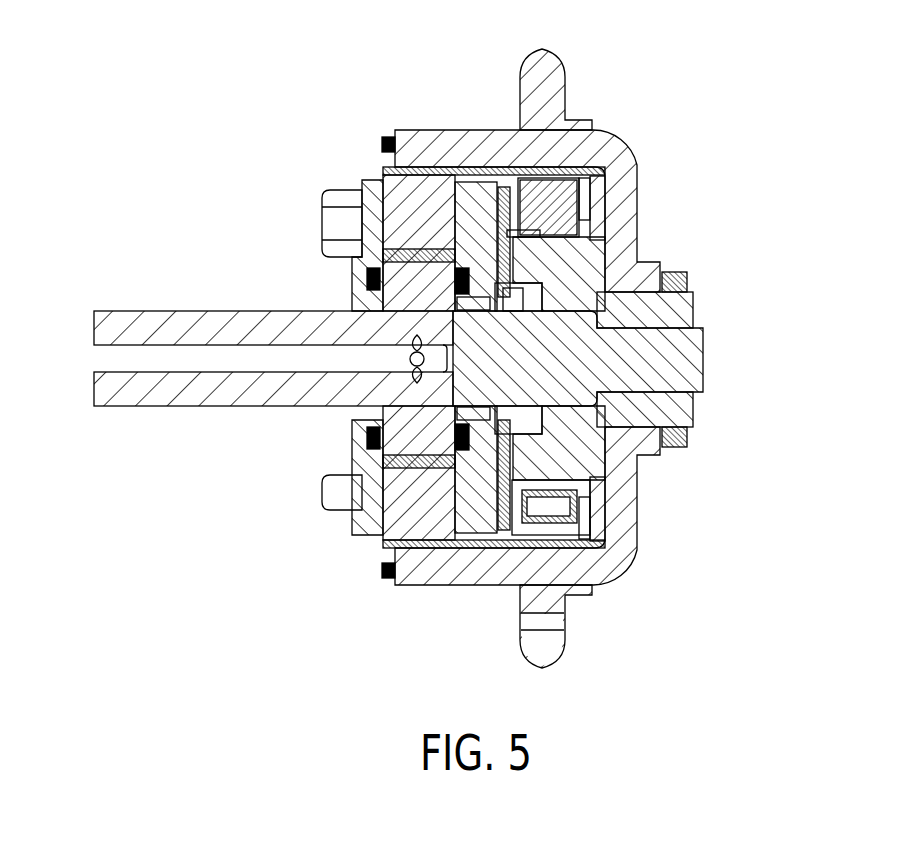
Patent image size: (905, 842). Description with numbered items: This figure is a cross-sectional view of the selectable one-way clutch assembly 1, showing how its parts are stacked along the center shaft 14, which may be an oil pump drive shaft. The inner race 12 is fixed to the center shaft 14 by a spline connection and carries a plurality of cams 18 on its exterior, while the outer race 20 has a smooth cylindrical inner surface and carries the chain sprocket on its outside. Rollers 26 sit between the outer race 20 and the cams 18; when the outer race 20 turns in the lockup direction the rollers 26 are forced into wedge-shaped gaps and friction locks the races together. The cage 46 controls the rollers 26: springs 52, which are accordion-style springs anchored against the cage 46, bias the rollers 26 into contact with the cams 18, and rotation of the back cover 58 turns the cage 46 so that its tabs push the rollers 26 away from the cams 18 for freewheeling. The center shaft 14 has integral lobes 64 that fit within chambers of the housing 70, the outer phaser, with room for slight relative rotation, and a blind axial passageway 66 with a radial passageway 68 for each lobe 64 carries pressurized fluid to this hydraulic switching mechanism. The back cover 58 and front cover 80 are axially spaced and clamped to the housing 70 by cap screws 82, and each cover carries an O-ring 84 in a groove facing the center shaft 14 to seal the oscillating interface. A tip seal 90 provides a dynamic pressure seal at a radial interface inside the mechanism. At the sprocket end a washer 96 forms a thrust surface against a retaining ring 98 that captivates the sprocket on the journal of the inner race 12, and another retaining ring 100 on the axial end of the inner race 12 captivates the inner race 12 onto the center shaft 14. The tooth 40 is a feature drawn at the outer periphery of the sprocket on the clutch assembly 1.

The clutch assembly 1 is at (621, 122).
The inner race 12 is at (582, 272).
The center shaft 14 is at (193, 418).
The cams 18 is at (600, 207).
The outer race 20 is at (387, 147).
The rollers 26 is at (552, 190).
The tooth 40 is at (534, 87).
The cage 46 is at (535, 537).
The springs 52 is at (585, 537).
The back cover 58 is at (477, 203).
The lobes 64 is at (365, 437).
The blind axial passageway 66 is at (107, 357).
The radial passageway 68 is at (330, 395).
The housing 70 is at (417, 500).
The front cover 80 is at (343, 173).
The cap screws 82 is at (294, 215).
The O-ring 84 is at (410, 345).
The tip seal 90 is at (363, 477).
The washer 96 is at (690, 449).
The retaining ring 98 is at (700, 428).
The retaining ring 100 is at (714, 324).